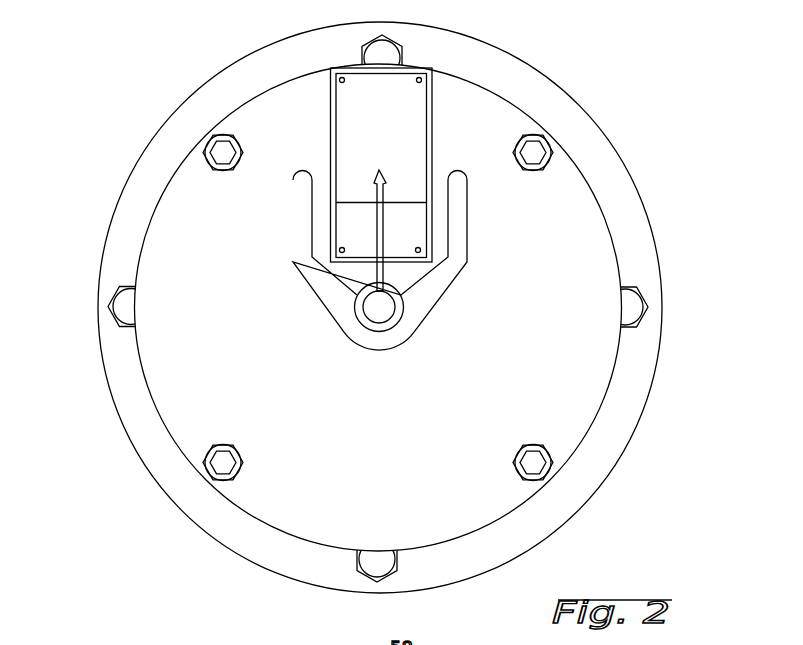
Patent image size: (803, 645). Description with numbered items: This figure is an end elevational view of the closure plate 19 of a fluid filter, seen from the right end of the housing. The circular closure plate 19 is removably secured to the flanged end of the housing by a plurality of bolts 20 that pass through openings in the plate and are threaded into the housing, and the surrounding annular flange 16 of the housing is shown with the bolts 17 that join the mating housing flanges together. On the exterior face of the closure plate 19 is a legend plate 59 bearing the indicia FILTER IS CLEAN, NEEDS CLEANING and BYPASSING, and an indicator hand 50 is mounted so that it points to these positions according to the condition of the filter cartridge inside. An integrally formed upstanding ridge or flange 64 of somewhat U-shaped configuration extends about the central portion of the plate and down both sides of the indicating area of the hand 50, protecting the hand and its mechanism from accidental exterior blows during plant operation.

The flange 16 is at (510, 58).
The bolts 17 is at (392, 52).
The closure plate 19 is at (592, 258).
The bolts 20 is at (545, 170).
The indicator hand 50 is at (382, 229).
The legend plate 59 is at (422, 102).
The upstanding ridge or flange 64 is at (458, 247).